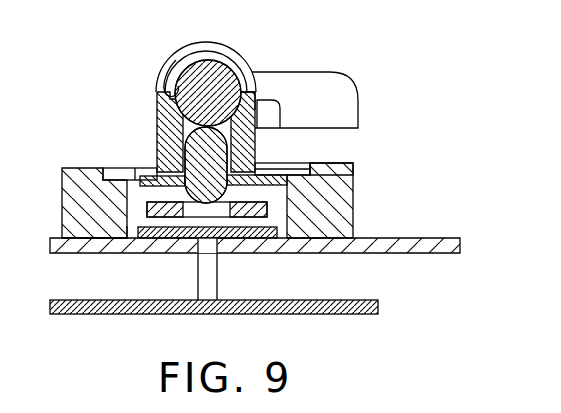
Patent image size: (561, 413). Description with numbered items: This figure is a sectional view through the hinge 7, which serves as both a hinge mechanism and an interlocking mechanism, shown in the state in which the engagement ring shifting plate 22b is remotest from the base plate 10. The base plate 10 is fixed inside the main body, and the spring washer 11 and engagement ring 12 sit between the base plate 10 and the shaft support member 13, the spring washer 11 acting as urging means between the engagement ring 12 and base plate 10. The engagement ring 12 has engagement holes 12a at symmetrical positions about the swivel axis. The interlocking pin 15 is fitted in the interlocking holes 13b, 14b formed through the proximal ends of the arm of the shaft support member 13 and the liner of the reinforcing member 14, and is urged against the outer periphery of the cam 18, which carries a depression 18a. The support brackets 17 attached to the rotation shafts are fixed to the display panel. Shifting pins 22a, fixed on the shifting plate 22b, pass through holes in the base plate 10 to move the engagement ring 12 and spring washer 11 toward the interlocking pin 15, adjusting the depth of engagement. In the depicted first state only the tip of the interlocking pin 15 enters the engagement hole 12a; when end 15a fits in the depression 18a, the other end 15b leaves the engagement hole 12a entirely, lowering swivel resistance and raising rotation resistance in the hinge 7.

The hinge 7 is at (227, 112).
The base plate 10 is at (460, 243).
The spring washer 11 is at (158, 240).
The engagement ring 12 is at (95, 200).
The engagement hole 12a is at (283, 245).
The shaft support member 13 is at (340, 208).
The interlocking hole 13b is at (353, 168).
The reinforcing member 14 is at (158, 135).
The interlocking hole 14b is at (255, 93).
The interlocking pin 15 is at (256, 160).
The end of interlocking pin 15a is at (158, 108).
The other end of interlocking pin 15b is at (185, 200).
The support bracket 17 is at (345, 97).
The cam 18 is at (222, 66).
The depression 18a is at (166, 55).
The shifting pin 22a is at (217, 286).
The shifting plate 22b is at (380, 305).